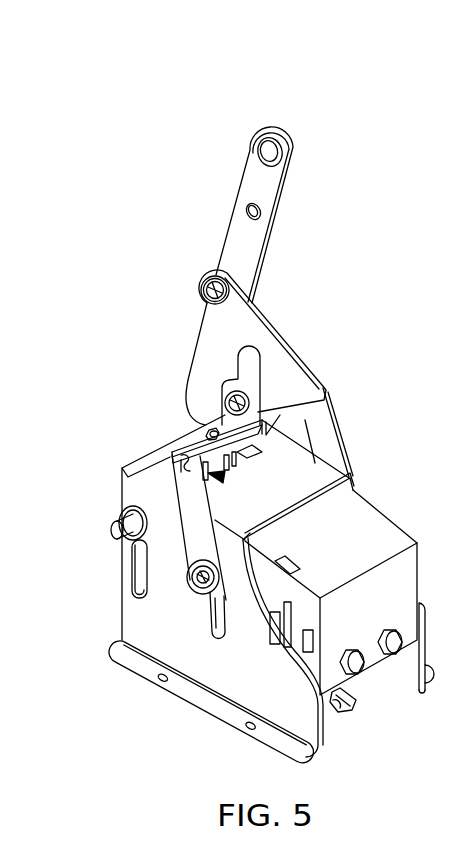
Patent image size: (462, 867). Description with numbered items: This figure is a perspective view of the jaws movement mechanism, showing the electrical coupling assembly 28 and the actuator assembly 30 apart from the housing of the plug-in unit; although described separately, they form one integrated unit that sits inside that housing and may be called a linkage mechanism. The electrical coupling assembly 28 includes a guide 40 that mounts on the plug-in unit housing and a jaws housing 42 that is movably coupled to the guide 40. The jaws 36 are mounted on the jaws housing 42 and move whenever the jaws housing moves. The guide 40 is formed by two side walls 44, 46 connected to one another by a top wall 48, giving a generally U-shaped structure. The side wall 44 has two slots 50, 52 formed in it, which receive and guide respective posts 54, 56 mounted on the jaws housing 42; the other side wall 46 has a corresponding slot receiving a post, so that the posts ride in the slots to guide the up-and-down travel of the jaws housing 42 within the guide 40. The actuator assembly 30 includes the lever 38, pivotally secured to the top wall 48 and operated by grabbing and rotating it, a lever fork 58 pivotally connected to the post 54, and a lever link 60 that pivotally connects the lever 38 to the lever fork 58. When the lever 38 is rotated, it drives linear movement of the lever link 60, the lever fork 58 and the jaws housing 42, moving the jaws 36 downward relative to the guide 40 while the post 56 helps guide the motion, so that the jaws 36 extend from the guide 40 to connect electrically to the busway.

The electrical coupling assembly 28 is at (203, 723).
The actuator assembly 30 is at (218, 214).
The jaws 36 is at (350, 708).
The lever 38 is at (265, 180).
The guide 40 is at (122, 610).
The jaws housing 42 is at (383, 519).
The side wall 44 is at (258, 690).
The side wall 46 is at (343, 490).
The top wall 48 is at (310, 473).
The slot 50 is at (208, 585).
The slot 52 is at (133, 572).
The post 54 is at (137, 675).
The post 56 is at (113, 531).
The lever fork 58 is at (318, 421).
The lever link 60 is at (263, 340).